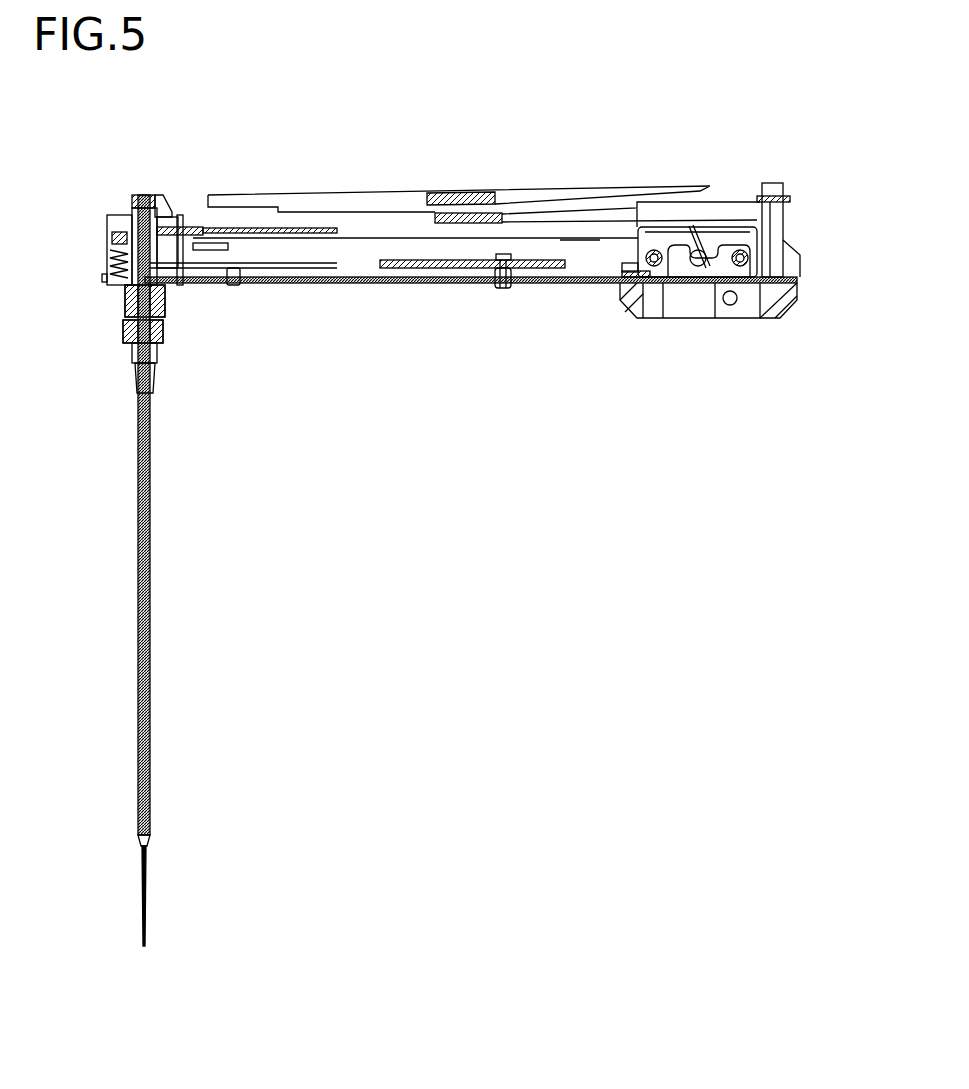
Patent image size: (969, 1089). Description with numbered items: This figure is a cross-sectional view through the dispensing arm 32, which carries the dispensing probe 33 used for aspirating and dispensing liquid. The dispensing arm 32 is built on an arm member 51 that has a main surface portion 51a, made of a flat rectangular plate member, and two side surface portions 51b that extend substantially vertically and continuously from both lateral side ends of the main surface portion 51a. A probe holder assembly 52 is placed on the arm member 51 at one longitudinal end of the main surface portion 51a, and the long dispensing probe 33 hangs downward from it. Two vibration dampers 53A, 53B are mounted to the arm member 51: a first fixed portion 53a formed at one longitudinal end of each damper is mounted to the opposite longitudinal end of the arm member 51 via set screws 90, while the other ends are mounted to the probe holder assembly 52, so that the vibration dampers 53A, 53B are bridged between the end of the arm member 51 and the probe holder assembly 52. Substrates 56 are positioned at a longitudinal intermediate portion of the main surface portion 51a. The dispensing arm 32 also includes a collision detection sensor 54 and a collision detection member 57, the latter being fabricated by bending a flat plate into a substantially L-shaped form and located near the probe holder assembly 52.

The dispensing arm 32 is at (426, 116).
The dispensing probe 33 is at (151, 623).
The arm member 51 is at (602, 284).
The main surface portion 51a is at (466, 272).
The side surface portions 51b is at (573, 266).
The probe holder assembly 52 is at (94, 214).
The vibration damper 53A is at (568, 214).
The vibration damper 53B is at (478, 194).
The first fixed portion 53a is at (744, 210).
The collision detection sensor 54 is at (178, 222).
The substrates 56 is at (519, 290).
The collision detection member 57 is at (177, 286).
The set screws 90 is at (778, 185).